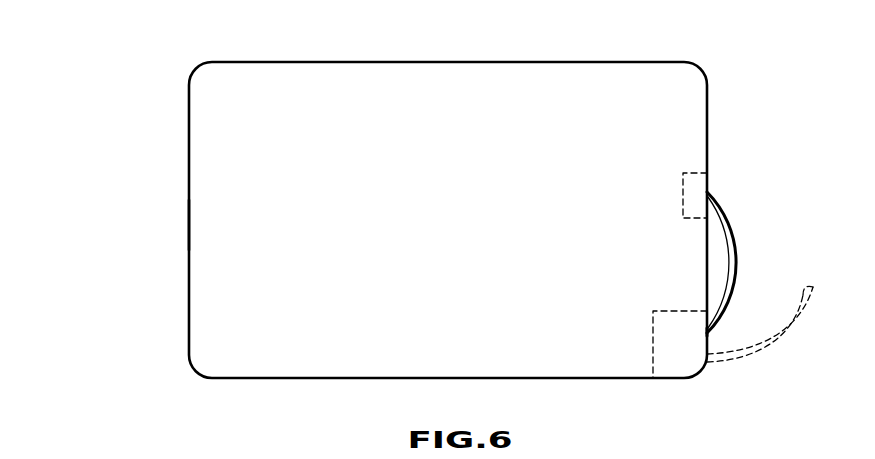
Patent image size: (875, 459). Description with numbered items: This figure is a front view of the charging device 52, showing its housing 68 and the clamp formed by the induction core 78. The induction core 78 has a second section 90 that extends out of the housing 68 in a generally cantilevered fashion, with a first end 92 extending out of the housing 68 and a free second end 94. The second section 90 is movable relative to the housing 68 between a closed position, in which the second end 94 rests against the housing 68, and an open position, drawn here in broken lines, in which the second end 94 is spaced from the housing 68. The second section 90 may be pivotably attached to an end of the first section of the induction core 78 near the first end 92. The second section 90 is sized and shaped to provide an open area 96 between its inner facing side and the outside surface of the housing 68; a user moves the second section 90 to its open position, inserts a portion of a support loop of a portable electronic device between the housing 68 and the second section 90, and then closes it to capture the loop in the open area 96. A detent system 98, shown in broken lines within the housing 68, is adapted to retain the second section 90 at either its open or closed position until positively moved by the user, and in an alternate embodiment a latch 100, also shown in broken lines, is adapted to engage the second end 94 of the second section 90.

The charging device 52 is at (140, 215).
The housing 68 is at (188, 125).
The induction core 78 is at (731, 231).
The second section 90 is at (735, 272).
The first end 92 is at (714, 331).
The second end 94 is at (712, 199).
The open area 96 is at (715, 233).
The detent system 98 is at (681, 362).
The latch 100 is at (693, 173).